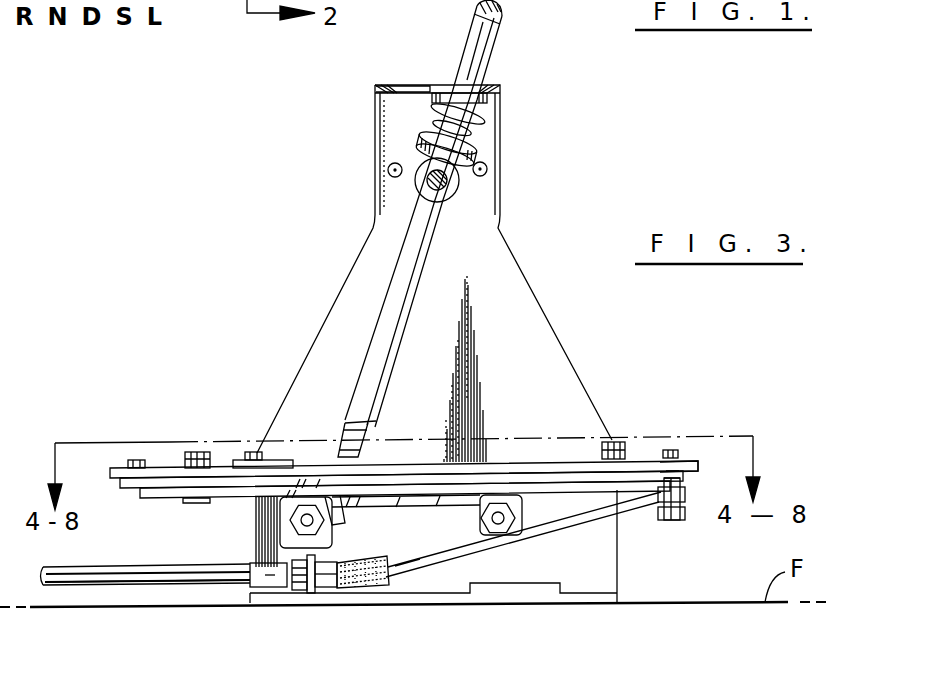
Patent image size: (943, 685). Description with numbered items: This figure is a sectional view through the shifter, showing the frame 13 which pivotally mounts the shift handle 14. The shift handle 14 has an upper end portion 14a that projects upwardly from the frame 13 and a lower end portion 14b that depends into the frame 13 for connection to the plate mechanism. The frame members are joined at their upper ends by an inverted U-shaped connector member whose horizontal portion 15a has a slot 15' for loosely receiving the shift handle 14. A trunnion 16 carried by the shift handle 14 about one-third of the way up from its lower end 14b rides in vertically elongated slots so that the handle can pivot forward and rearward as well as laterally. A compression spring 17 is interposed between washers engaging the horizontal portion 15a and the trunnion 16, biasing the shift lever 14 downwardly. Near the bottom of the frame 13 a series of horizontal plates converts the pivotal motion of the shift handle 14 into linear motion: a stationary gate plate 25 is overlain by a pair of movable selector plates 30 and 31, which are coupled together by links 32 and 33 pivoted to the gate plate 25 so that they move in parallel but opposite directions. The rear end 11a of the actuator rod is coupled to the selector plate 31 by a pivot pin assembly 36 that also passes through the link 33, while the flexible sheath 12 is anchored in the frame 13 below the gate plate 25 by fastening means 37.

The rear end of actuator rod 11a is at (627, 522).
The flexible sheath 12 is at (68, 567).
The frame 13 is at (517, 296).
The shift handle 14 is at (397, 290).
The upper end portion 14a is at (497, 40).
The lower end portion 14b is at (343, 447).
The slot 15' is at (403, 67).
The horizontal portion 15a is at (488, 82).
The trunnion 16 is at (447, 182).
The compression spring 17 is at (470, 135).
The gate plate 25 is at (245, 490).
The first selector plate 30 is at (132, 482).
The second selector plate 31 is at (636, 457).
The link 32 is at (158, 468).
The link 33 is at (698, 470).
The pivot pin assembly 36 is at (683, 520).
The fastening means 37 is at (320, 560).